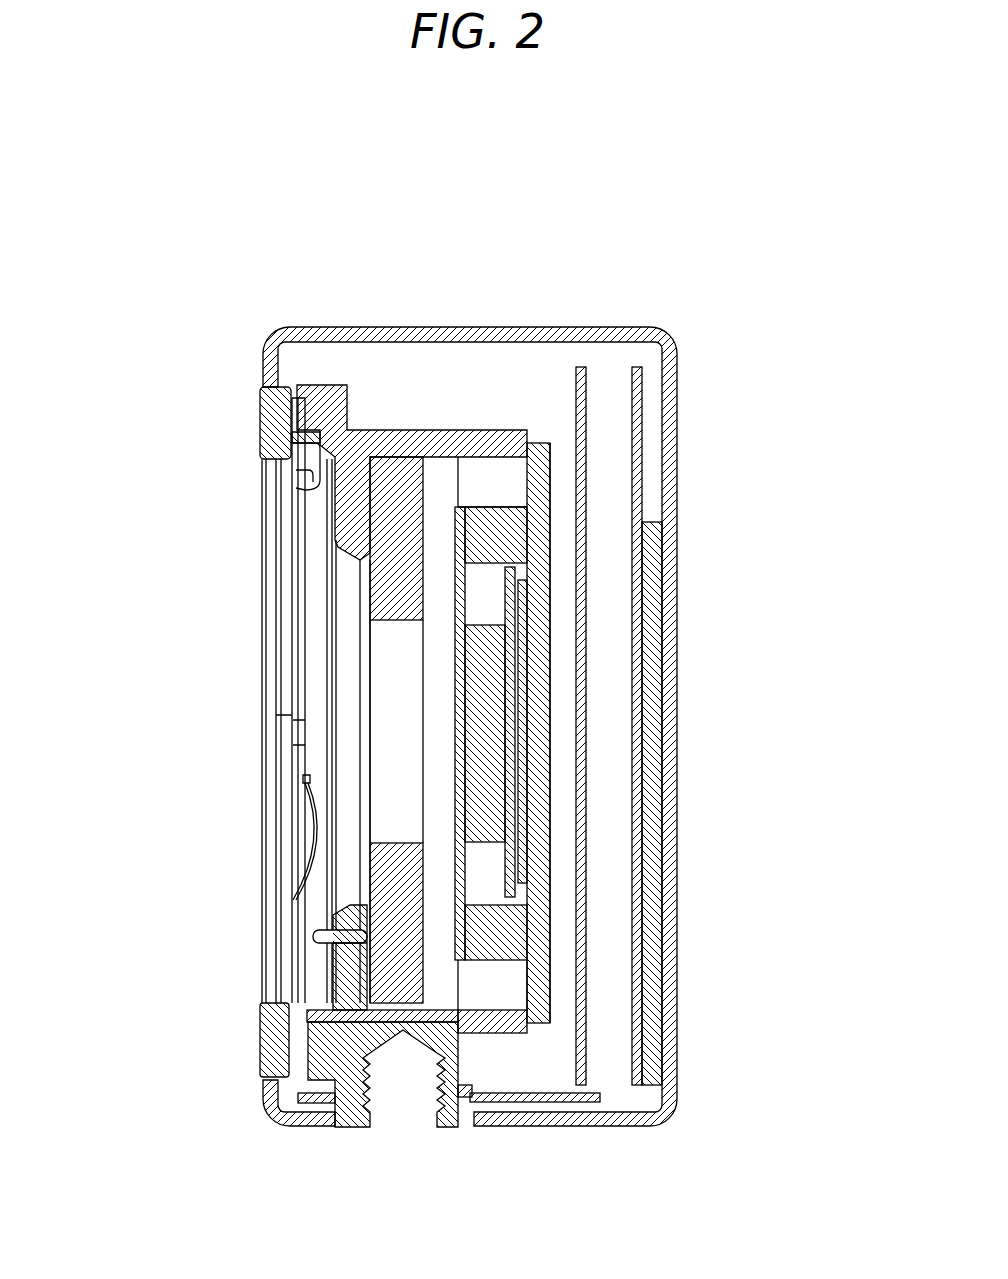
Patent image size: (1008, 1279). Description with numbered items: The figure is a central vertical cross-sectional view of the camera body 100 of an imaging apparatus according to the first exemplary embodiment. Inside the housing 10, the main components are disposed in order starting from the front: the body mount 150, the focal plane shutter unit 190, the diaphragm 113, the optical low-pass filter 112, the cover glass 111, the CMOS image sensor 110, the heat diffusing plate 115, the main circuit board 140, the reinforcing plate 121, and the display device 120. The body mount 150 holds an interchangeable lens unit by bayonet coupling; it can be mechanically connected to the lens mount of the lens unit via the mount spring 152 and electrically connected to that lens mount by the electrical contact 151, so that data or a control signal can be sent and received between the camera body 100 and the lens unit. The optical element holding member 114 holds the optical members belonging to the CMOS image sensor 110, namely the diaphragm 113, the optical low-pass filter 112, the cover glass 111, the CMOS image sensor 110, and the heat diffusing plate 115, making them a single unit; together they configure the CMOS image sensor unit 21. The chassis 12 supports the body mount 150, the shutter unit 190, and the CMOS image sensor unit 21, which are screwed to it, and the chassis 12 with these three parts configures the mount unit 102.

The camera body 100 is at (140, 204).
The mount unit 102 is at (706, 201).
The CMOS image sensor unit 21 is at (818, 259).
The housing 10 is at (263, 372).
The chassis 12 is at (318, 433).
The body mount 150 is at (283, 395).
The mount spring 152 is at (300, 465).
The electrical contact 151 is at (315, 935).
The focal plane shutter unit 190 is at (386, 495).
The diaphragm 113 is at (463, 513).
The optical element holding member 114 is at (503, 560).
The cover glass 111 is at (482, 643).
The optical low-pass filter 112 is at (521, 585).
The CMOS image sensor 110 is at (538, 643).
The heat diffusing plate 115 is at (551, 620).
The main circuit board 140 is at (582, 998).
The reinforcing plate 121 is at (637, 757).
The display device 120 is at (655, 837).